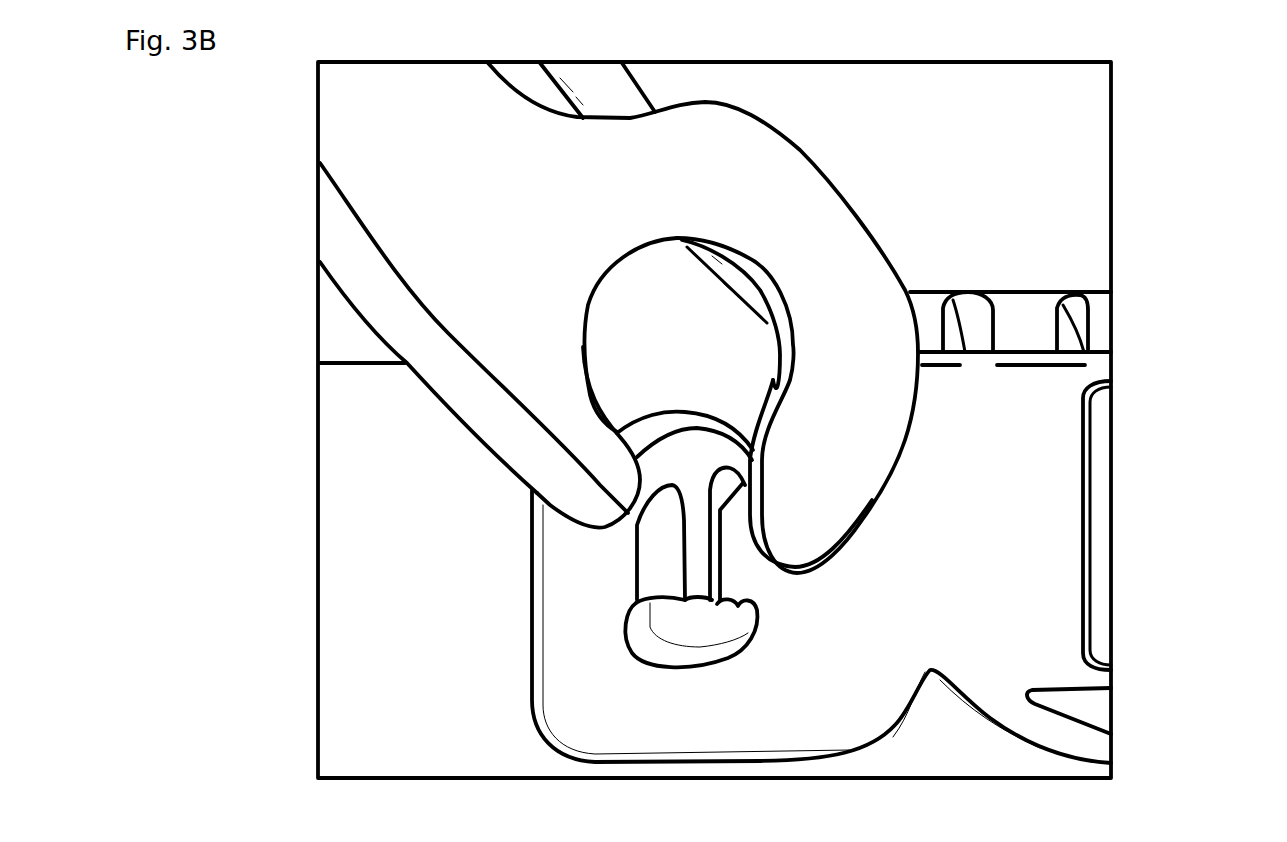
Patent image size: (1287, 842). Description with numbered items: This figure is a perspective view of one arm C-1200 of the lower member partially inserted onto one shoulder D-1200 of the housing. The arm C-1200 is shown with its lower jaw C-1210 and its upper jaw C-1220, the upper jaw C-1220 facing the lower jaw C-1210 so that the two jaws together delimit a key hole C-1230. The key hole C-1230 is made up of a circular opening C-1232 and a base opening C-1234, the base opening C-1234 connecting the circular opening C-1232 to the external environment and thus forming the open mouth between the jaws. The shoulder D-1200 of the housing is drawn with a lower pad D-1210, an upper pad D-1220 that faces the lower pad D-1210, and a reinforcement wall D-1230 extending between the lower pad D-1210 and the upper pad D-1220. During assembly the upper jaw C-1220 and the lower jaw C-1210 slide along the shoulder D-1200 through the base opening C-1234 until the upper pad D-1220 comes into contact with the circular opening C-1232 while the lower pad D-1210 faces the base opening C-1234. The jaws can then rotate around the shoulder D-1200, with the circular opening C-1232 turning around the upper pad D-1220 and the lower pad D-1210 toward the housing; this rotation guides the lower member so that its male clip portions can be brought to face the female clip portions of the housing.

The arm C-1200 is at (315, 148).
The upper jaw C-1220 is at (810, 158).
The key hole C-1230 is at (207, 353).
The circular opening C-1232 is at (597, 285).
The base opening C-1234 is at (625, 462).
The lower jaw C-1210 is at (528, 482).
The shoulder D-1200 is at (740, 545).
The upper pad D-1220 is at (700, 412).
The reinforcement wall D-1230 is at (713, 583).
The lower pad D-1210 is at (752, 633).